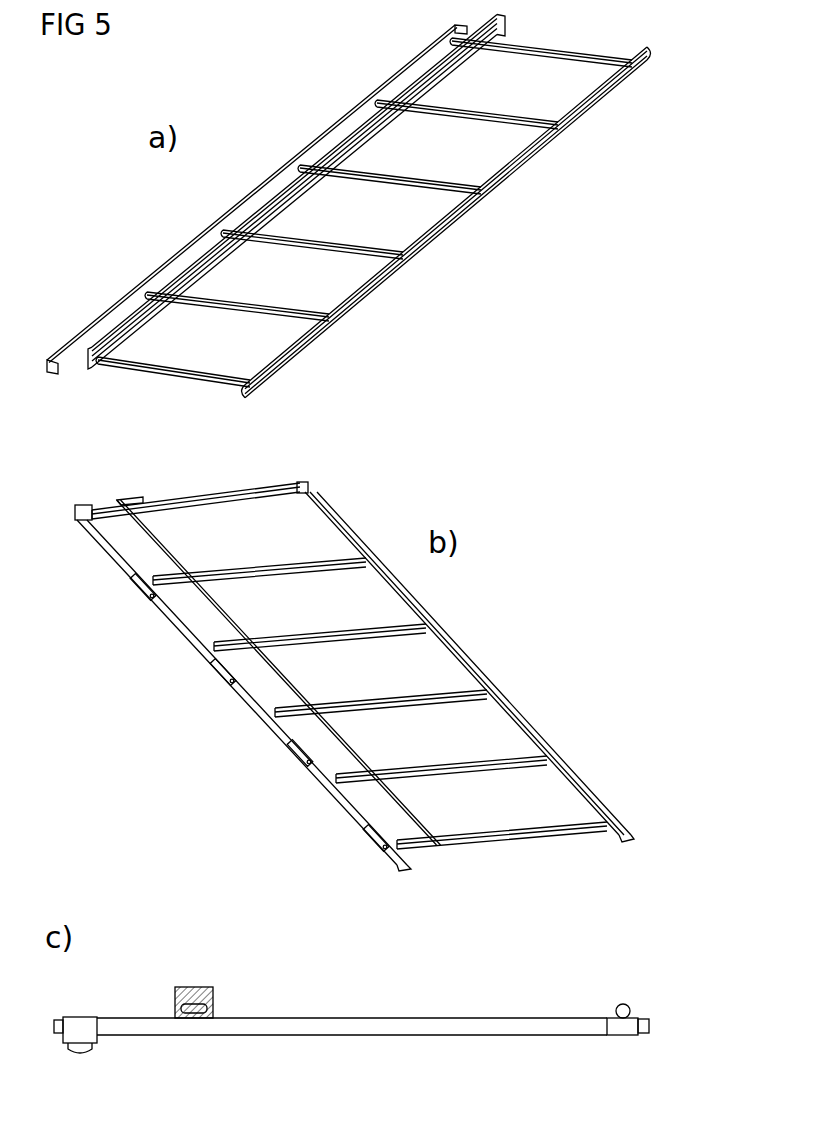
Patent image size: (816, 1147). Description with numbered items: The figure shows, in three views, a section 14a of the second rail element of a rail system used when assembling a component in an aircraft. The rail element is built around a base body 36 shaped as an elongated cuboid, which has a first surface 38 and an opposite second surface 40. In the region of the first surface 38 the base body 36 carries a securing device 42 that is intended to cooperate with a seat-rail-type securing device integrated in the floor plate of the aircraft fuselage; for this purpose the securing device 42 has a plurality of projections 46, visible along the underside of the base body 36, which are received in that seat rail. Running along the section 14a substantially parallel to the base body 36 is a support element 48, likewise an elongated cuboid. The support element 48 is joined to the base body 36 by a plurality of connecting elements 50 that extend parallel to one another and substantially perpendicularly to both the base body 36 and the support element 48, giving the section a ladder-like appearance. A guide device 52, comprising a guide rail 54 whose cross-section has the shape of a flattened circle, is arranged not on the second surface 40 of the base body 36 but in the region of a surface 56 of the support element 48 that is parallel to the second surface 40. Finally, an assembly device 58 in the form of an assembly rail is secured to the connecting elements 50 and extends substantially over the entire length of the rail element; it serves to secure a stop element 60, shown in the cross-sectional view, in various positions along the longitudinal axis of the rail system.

The section of the second rail element 14a is at (276, 108).
The base body 36 is at (190, 252).
The first surface 38 is at (64, 373).
The second surface 40 is at (103, 320).
The securing device 42 is at (392, 885).
The projections 46 is at (146, 598).
The support element 48 is at (589, 116).
The connecting elements 50 is at (566, 52).
The guide device 52 is at (528, 172).
The guide rail 54 is at (462, 206).
The surface of the support element 56 is at (303, 342).
The assembly device 58 is at (292, 193).
The stop element 60 is at (192, 987).